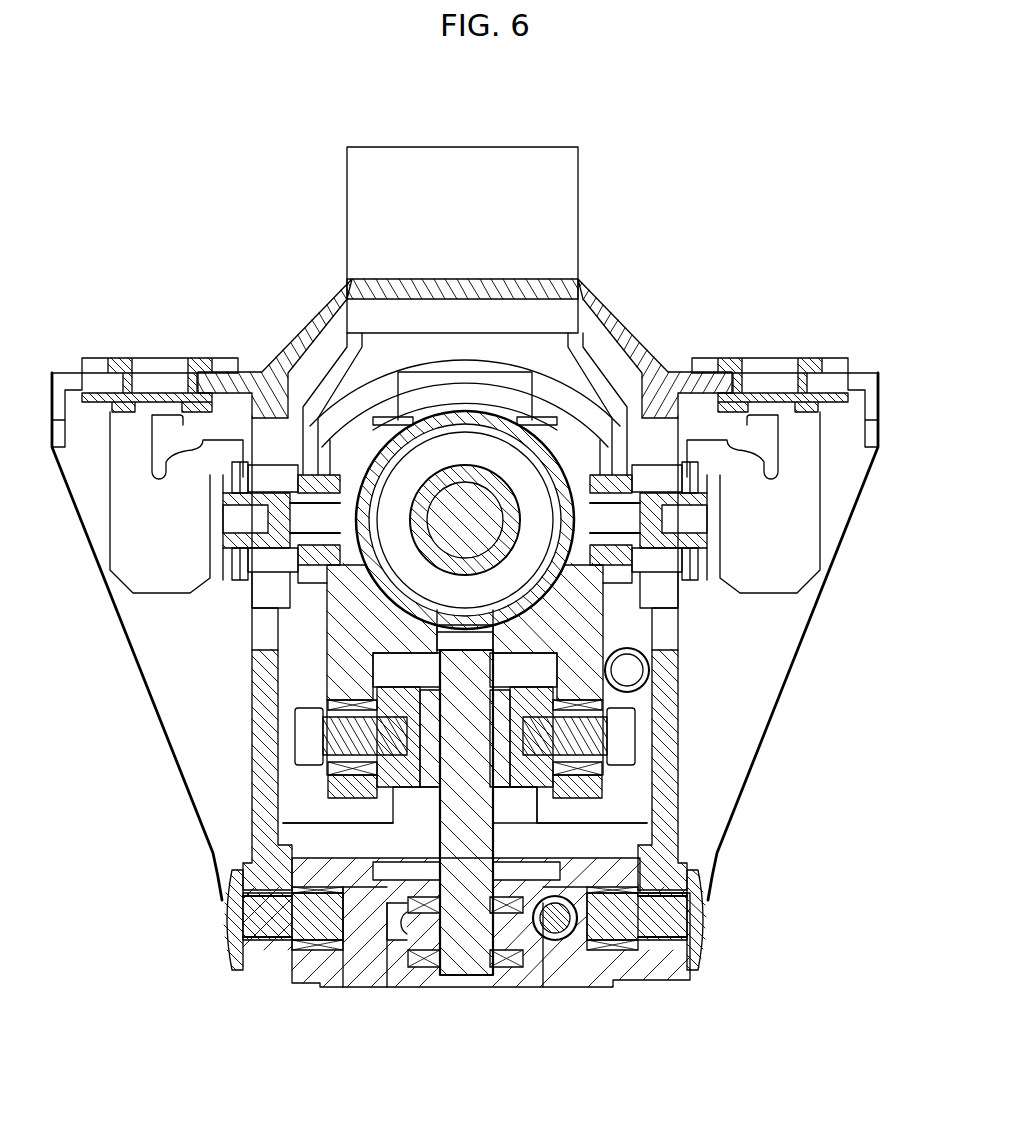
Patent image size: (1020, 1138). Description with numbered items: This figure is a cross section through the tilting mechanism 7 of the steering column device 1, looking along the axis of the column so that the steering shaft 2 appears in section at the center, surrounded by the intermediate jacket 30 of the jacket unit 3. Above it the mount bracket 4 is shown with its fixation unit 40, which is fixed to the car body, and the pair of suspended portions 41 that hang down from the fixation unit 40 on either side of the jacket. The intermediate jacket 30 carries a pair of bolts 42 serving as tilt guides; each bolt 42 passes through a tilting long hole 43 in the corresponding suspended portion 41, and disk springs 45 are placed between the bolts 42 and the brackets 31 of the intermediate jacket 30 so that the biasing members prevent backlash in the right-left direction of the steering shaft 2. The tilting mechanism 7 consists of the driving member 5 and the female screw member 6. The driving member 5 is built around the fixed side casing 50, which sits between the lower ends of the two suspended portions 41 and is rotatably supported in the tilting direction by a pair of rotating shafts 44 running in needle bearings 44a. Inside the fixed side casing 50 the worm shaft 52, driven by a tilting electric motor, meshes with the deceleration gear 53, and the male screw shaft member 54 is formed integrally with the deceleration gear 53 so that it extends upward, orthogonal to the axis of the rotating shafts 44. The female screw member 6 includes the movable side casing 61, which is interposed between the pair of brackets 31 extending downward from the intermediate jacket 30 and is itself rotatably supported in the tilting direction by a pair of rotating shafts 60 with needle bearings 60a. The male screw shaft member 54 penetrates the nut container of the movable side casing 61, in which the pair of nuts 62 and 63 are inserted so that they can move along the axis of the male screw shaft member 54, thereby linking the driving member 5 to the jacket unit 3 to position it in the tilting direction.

The steering column device 1 is at (697, 138).
The steering shaft 2 is at (490, 462).
The jacket unit 3 is at (316, 617).
The mount bracket 4 is at (630, 308).
The driving member 5 is at (316, 852).
The female screw member 6 is at (330, 776).
The tilting mechanism 7 is at (147, 783).
The intermediate jacket 30 is at (562, 432).
The brackets 31 is at (340, 788).
The fixation unit 40 is at (562, 278).
The suspended portions 41 is at (263, 662).
The bolts 42 is at (230, 497).
The tilting long holes 43 is at (258, 562).
The rotating shafts 44 is at (263, 930).
The needle bearings 44a is at (314, 942).
The disk springs 45 is at (212, 372).
The fixed side casing 50 is at (367, 925).
The worm shaft 52 is at (554, 942).
The deceleration gear 53 is at (513, 930).
The male screw shaft member 54 is at (452, 846).
The rotating shafts 60 is at (306, 740).
The needle bearings 60a is at (385, 760).
The movable side casing 61 is at (650, 670).
The nut 62 is at (505, 792).
The nut 63 is at (500, 700).